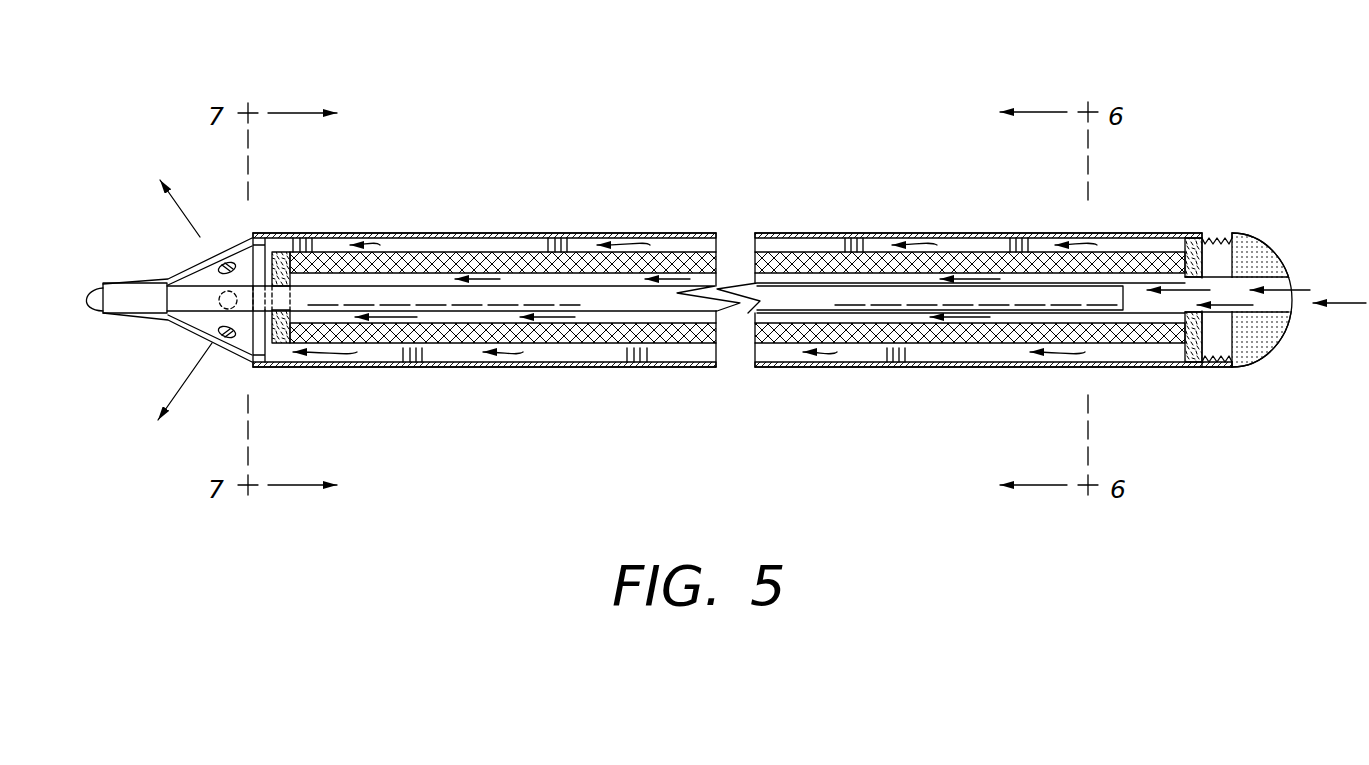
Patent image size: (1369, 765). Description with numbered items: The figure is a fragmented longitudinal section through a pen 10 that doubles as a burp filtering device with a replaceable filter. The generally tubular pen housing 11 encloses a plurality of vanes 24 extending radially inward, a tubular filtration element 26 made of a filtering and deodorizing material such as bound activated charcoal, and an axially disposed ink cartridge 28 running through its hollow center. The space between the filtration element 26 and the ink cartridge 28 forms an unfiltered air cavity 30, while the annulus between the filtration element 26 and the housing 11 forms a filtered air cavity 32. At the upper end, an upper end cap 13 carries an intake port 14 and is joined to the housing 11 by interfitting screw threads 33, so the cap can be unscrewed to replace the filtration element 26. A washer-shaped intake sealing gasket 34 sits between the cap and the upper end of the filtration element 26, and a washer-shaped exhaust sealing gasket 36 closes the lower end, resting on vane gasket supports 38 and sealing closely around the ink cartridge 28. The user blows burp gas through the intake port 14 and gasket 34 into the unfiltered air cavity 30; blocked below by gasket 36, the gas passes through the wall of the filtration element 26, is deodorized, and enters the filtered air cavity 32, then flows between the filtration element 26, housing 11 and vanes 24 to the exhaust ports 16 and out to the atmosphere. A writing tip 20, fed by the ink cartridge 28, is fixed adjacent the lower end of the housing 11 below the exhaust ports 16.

The pen 10 is at (1140, 150).
The pen housing 11 is at (923, 238).
The upper end cap 13 is at (1265, 245).
The intake port 14 is at (1283, 307).
The exhaust ports 16 is at (213, 268).
The writing tip 20 is at (142, 288).
The vanes 24 is at (808, 245).
The filtration element 26 is at (663, 262).
The ink cartridge 28 is at (470, 305).
The unfiltered air cavity 30 is at (425, 285).
The filtered air cavity 32 is at (977, 245).
The screw threads 33 is at (1218, 362).
The intake sealing gasket 34 is at (1197, 240).
The exhaust sealing gasket 36 is at (326, 238).
The vane gasket supports 38 is at (280, 238).